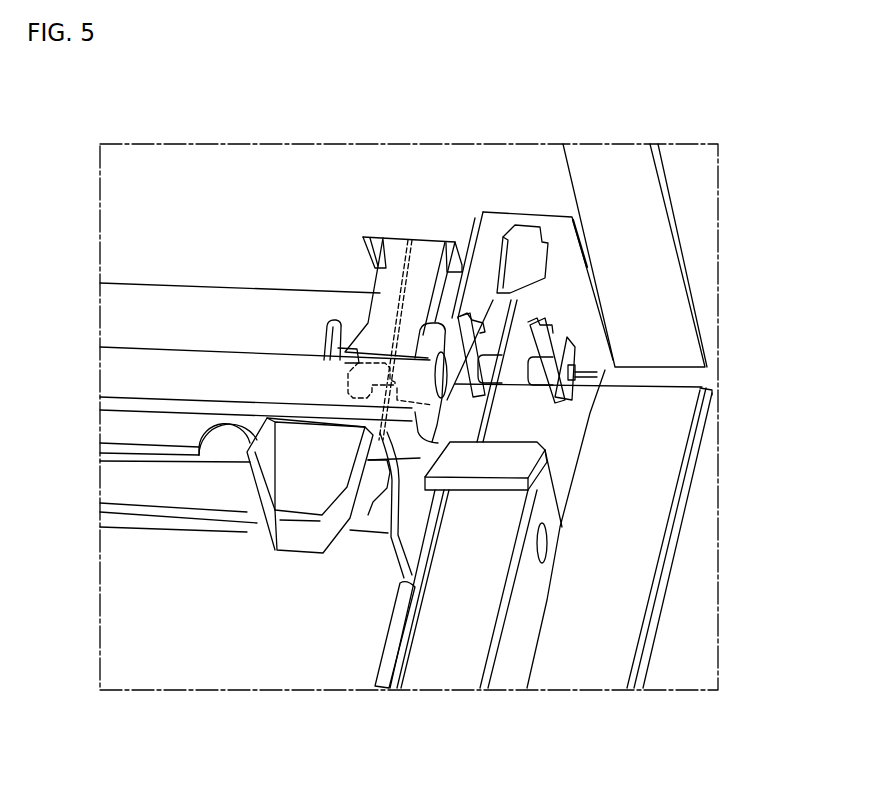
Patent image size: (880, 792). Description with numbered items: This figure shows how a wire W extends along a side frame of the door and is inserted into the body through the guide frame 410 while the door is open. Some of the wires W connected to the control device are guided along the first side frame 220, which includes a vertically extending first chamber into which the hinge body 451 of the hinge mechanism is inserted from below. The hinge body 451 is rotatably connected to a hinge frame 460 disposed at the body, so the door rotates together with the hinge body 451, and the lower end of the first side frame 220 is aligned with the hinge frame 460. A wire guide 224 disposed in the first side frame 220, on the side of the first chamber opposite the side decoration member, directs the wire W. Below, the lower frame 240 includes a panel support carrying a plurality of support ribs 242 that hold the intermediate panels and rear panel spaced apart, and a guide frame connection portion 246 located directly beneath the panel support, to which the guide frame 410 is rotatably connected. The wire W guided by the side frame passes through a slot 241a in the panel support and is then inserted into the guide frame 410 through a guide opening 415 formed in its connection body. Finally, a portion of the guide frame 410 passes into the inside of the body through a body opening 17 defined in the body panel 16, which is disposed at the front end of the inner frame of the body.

The body panel 16 is at (282, 158).
The body opening 17 is at (364, 236).
The first side frame 220 is at (443, 690).
The wire guide 224 is at (380, 690).
The lower frame 240 is at (120, 357).
The slot 241a is at (400, 455).
The support ribs 242 is at (293, 473).
The guide frame connection portion 246 is at (330, 318).
The guide frame 410 is at (422, 243).
The guide opening 415 is at (348, 382).
The hinge body 451 is at (500, 407).
The hinge frame 460 is at (577, 287).
The wire W is at (408, 580).